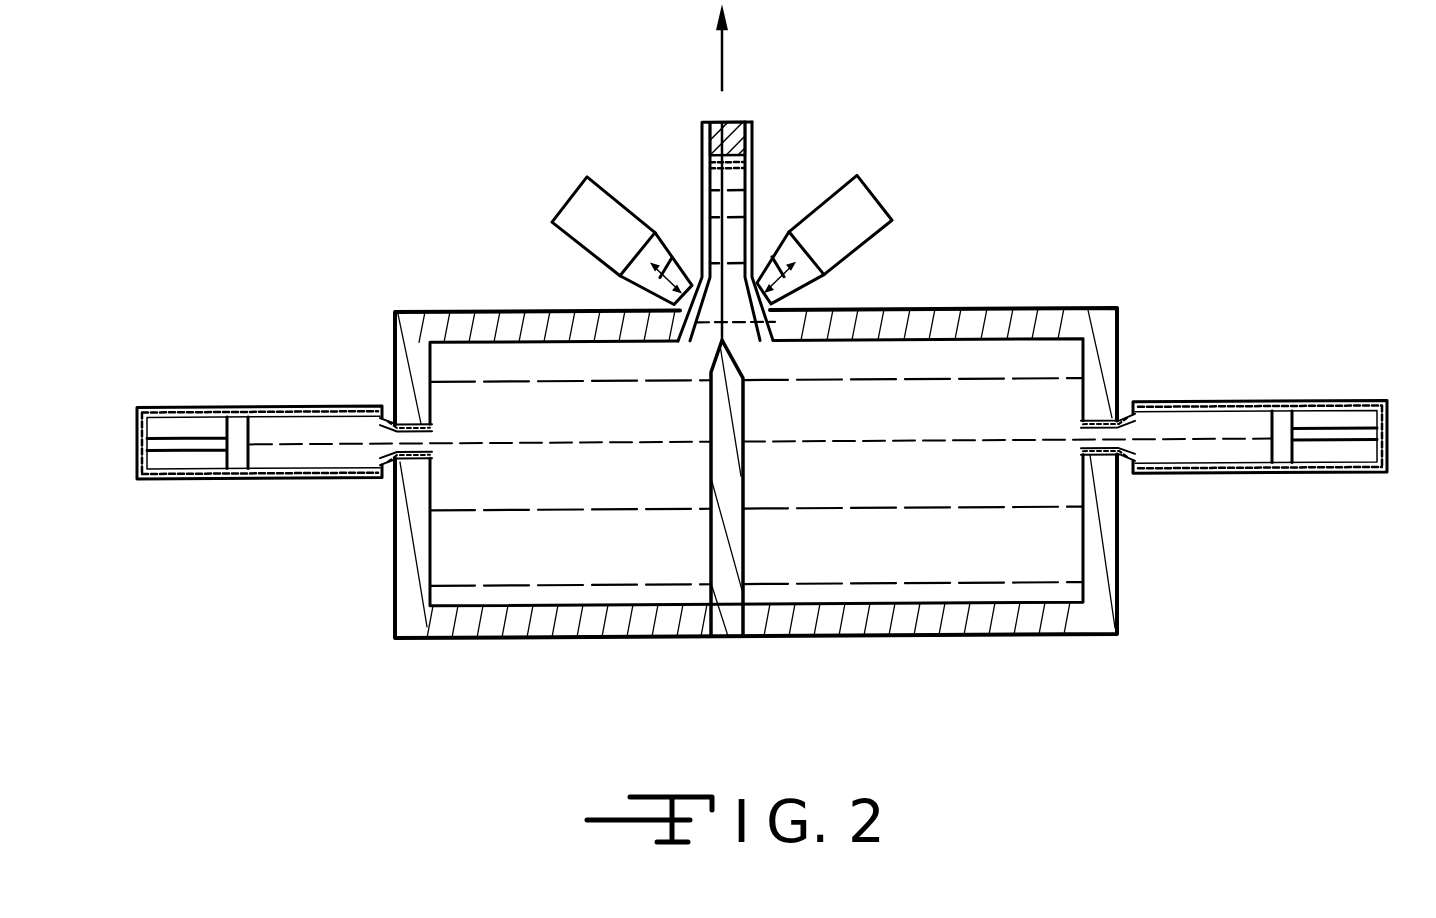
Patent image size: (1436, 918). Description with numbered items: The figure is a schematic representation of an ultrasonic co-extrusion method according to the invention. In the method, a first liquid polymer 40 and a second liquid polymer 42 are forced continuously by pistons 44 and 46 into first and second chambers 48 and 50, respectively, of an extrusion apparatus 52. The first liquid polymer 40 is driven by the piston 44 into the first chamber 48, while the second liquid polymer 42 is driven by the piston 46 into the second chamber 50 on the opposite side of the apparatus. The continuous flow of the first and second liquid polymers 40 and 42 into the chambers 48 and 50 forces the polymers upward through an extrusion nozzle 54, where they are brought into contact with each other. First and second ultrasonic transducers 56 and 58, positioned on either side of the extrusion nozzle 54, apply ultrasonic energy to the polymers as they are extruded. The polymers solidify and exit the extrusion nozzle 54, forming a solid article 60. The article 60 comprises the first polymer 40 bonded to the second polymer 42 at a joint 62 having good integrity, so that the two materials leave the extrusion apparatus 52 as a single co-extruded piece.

The first liquid polymer 40 is at (312, 428).
The second liquid polymer 42 is at (1203, 424).
The piston 44 is at (243, 428).
The piston 46 is at (1283, 426).
The first chamber 48 is at (497, 483).
The second chamber 50 is at (1047, 527).
The extrusion apparatus 52 is at (348, 204).
The extrusion nozzle 54 is at (800, 306).
The first ultrasonic transducer 56 is at (606, 218).
The second ultrasonic transducer 58 is at (855, 210).
The solid article 60 is at (750, 146).
The joint 62 is at (724, 144).